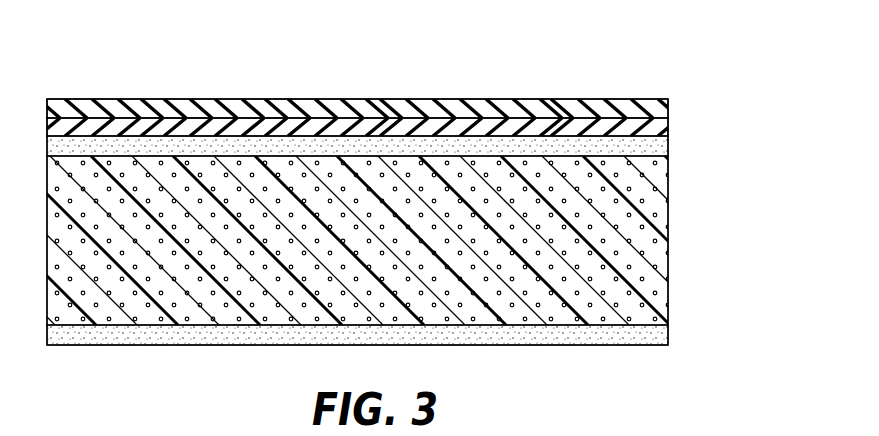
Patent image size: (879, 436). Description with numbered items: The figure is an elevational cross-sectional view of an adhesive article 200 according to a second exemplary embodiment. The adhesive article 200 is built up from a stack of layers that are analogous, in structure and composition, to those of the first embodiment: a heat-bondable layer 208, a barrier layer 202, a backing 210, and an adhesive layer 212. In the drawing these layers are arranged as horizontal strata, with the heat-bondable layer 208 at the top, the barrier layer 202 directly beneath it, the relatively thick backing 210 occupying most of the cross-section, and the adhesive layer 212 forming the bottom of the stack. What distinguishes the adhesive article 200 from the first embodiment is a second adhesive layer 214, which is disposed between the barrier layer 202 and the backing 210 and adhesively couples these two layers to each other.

The adhesive article 200 is at (608, 58).
The heat-bondable layer 208 is at (668, 108).
The barrier layer 202 is at (663, 127).
The second adhesive layer 214 is at (660, 148).
The backing 210 is at (662, 248).
The adhesive layer 212 is at (663, 337).